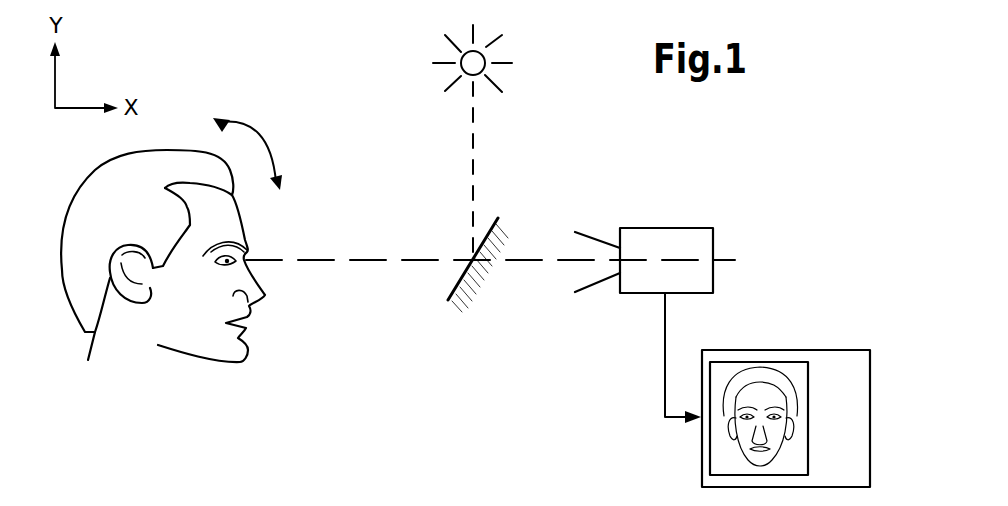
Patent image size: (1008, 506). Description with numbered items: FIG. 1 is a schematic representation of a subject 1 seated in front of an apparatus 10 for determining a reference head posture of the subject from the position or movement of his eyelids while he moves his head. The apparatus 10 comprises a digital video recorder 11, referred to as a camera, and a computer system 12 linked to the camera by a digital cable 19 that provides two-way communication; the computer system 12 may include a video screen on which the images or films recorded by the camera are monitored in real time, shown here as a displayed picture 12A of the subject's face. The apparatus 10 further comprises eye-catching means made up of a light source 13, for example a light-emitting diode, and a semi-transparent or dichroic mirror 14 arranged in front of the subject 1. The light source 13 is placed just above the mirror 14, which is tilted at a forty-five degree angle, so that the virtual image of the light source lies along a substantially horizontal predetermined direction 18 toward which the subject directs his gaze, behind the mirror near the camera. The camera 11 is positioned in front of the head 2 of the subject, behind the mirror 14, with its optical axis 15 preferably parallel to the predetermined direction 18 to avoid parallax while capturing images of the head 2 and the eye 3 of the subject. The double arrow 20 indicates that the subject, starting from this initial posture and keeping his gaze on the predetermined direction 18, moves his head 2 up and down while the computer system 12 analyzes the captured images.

The subject 1 is at (186, 247).
The head 2 is at (186, 209).
The eye 3 is at (236, 261).
The apparatus 10 is at (775, 186).
The digital video recorder 11 is at (660, 228).
The computer system 12 is at (863, 350).
The displayed face image 12A is at (777, 362).
The light source 13 is at (478, 50).
The semi-transparent or dichroic mirror 14 is at (455, 291).
The optical axis 15 is at (540, 260).
The predetermined direction 18 is at (380, 260).
The digital cable 19 is at (665, 328).
The double arrow 20 is at (250, 132).